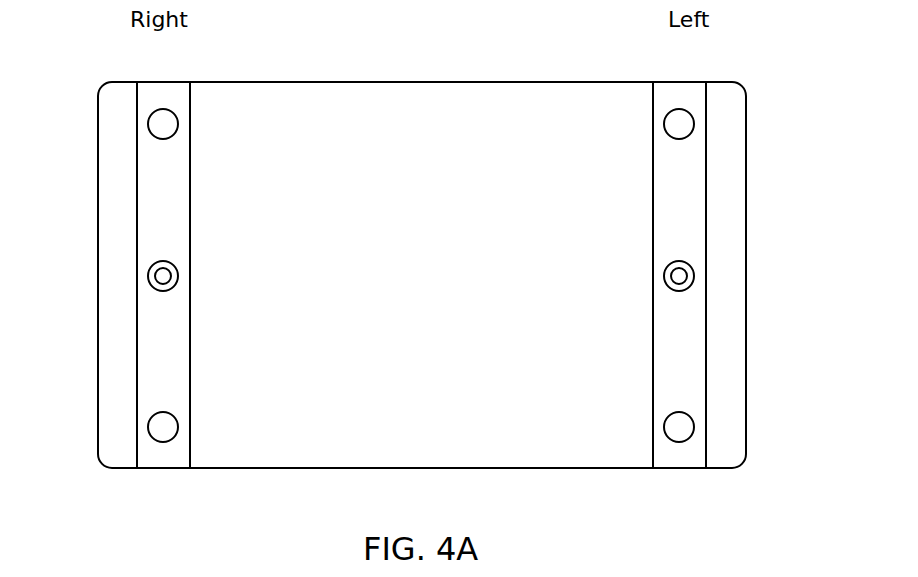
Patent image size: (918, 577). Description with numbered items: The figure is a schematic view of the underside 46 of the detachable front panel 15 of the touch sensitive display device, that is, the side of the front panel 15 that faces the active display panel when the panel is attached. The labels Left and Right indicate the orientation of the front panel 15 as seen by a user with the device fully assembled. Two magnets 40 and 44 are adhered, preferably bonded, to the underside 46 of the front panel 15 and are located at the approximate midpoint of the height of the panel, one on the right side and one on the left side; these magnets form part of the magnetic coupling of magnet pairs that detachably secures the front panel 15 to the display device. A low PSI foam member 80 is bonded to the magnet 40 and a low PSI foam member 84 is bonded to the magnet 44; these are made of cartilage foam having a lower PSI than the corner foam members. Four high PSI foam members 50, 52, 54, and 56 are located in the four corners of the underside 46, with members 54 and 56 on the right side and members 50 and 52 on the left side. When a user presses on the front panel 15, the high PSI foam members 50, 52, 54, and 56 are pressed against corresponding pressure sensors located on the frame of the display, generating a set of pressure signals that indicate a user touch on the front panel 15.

The front panel 15 is at (386, 105).
The magnet 40 is at (148, 278).
The magnet 44 is at (694, 278).
The underside 46 is at (576, 437).
The high PSI foam member 50 is at (694, 122).
The high PSI foam member 52 is at (694, 430).
The high PSI foam member 54 is at (148, 122).
The high PSI foam member 56 is at (148, 430).
The low PSI foam member 80 is at (160, 290).
The low PSI foam member 84 is at (684, 290).